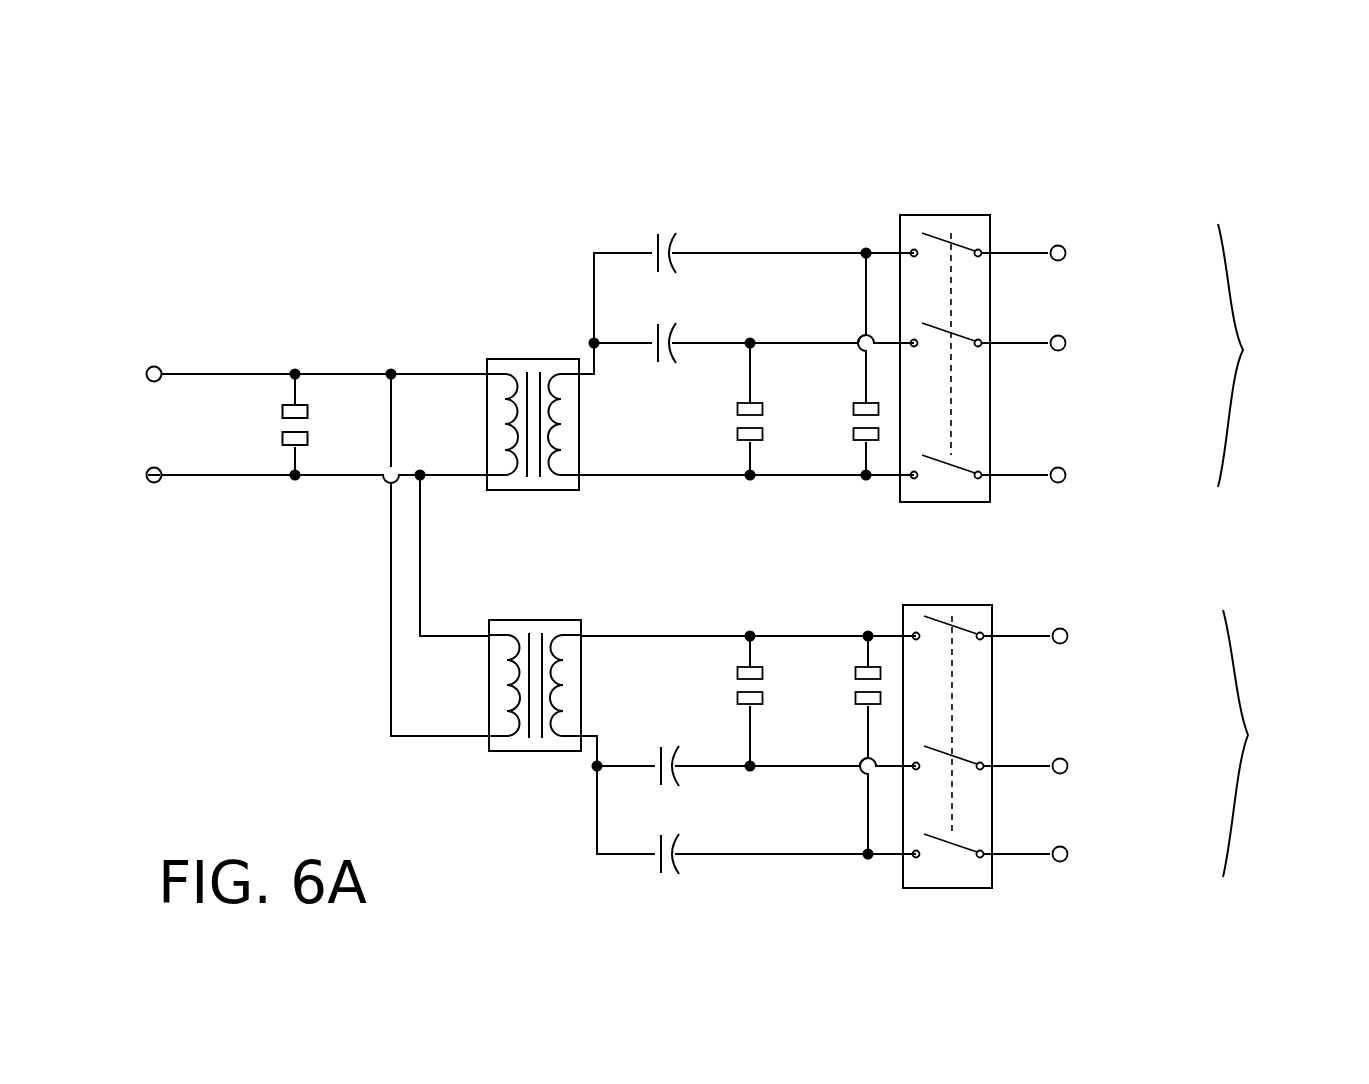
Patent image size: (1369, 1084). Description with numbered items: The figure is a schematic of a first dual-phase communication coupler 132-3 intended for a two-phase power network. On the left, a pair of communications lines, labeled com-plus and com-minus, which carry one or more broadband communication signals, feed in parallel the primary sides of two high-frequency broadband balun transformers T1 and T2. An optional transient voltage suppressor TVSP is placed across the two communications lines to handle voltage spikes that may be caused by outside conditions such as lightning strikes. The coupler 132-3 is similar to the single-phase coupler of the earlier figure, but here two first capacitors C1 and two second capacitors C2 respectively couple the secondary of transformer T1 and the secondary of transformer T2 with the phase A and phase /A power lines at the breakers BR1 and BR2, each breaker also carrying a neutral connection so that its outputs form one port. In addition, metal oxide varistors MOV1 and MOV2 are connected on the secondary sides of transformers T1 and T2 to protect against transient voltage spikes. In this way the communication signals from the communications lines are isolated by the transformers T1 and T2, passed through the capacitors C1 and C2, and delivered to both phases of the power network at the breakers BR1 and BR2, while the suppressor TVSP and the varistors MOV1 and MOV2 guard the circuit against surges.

The communication coupler 132-3 is at (293, 197).
The transient voltage suppressor TVSP is at (261, 424).
The balun transformer T1 is at (533, 405).
The balun transformer T2 is at (535, 669).
The first capacitors C1 is at (667, 283).
The second capacitors C2 is at (669, 827).
The metal oxide varistor MOV1 is at (775, 364).
The metal oxide varistor MOV2 is at (776, 745).
The breaker BR1 is at (983, 378).
The breaker BR2 is at (985, 763).